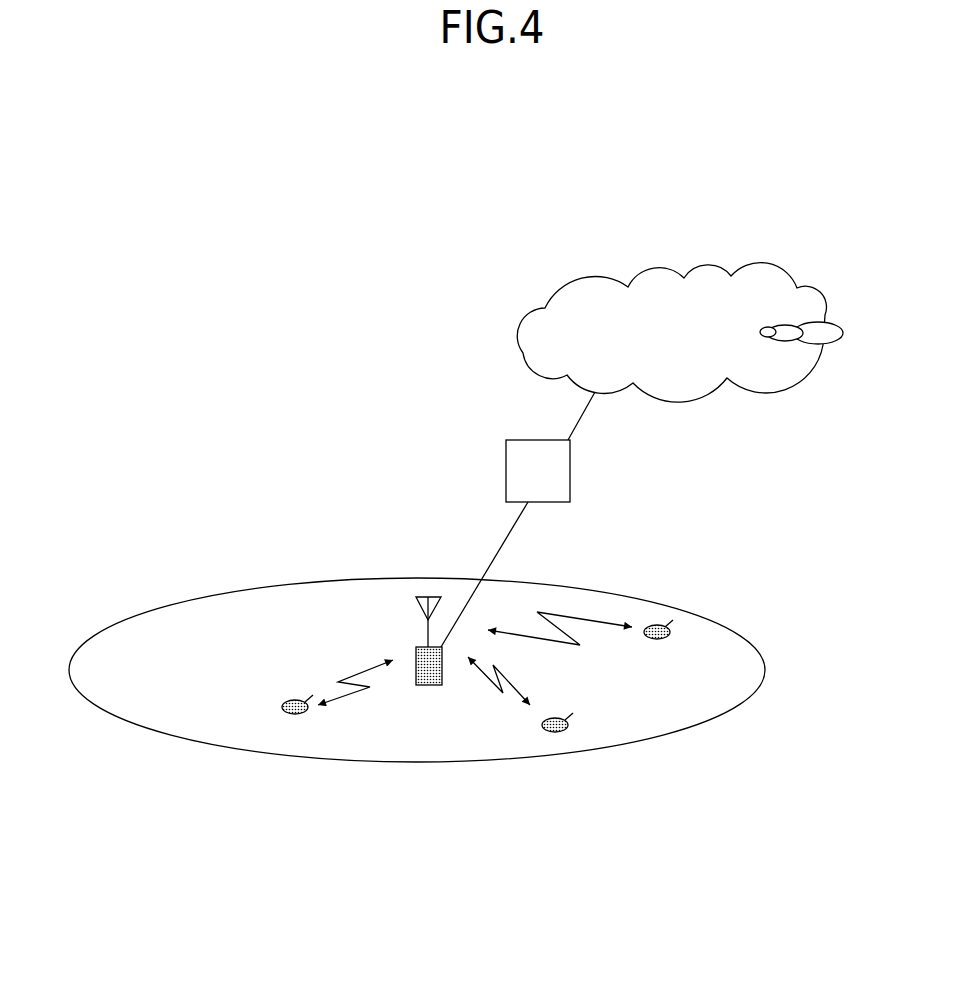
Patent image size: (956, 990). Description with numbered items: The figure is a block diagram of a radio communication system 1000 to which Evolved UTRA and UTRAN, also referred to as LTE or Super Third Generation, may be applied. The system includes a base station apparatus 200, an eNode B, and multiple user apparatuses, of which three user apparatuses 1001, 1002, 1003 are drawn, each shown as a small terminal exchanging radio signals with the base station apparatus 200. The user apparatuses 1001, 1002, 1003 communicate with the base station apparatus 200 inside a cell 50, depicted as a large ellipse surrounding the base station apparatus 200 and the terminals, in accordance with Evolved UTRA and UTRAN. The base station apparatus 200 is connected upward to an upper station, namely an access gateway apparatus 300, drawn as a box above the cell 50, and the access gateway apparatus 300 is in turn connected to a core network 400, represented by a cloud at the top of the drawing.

The radio communication system 1000 is at (256, 287).
The core network 400 is at (697, 262).
The access gateway apparatus 300 is at (570, 470).
The base station apparatus 200 is at (418, 638).
The cell 50 is at (408, 763).
The user apparatus 1001 is at (287, 713).
The user apparatus 1002 is at (563, 733).
The user apparatus 1003 is at (665, 640).